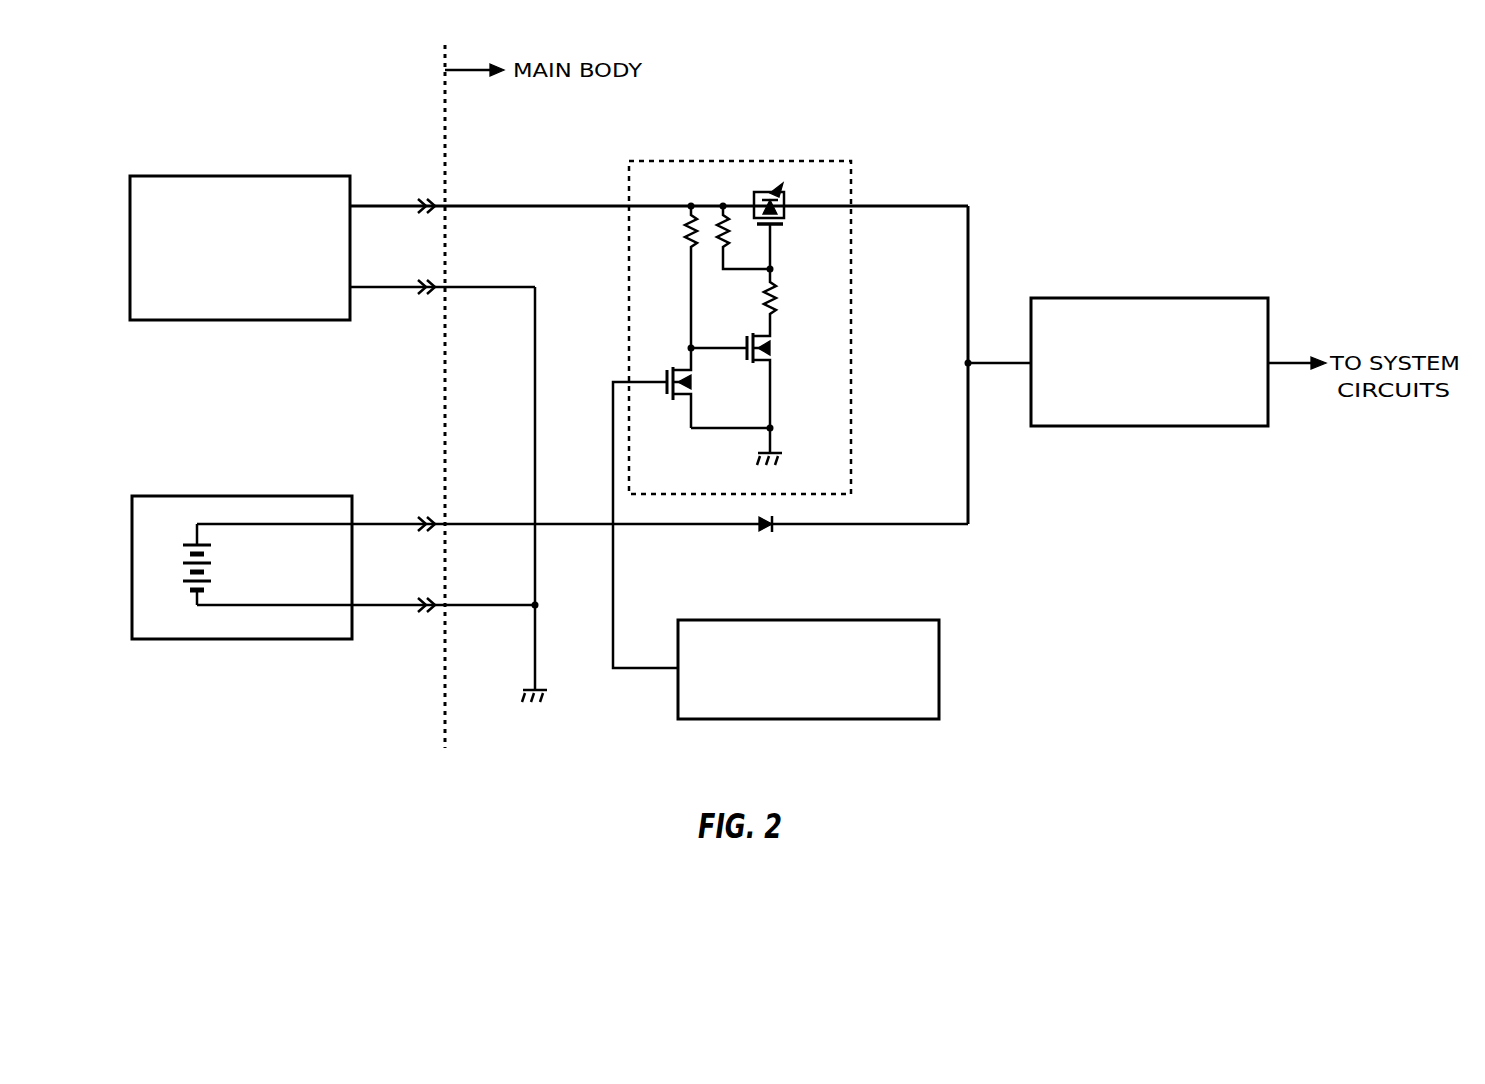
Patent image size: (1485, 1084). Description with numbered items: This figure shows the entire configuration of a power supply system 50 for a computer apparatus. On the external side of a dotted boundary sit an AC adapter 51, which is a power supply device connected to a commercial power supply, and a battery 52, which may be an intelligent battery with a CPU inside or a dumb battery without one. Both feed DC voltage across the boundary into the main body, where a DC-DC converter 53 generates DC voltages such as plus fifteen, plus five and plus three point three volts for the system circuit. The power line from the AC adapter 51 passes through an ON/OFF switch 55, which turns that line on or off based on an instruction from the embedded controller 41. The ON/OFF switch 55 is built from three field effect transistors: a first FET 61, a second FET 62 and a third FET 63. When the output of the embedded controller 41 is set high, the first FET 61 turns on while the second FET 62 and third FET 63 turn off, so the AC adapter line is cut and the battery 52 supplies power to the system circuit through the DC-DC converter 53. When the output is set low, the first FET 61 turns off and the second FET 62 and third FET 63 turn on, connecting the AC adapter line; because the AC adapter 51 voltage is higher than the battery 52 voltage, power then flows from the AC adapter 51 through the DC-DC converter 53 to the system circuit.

The embedded controller 41 is at (939, 644).
The power supply circuit 50 is at (840, 92).
The AC adapter 51 is at (306, 176).
The battery 52 is at (310, 496).
The DC-DC converter 53 is at (1220, 298).
The ON/OFF switch 55 is at (756, 312).
The first FET (FET1) 61 is at (660, 350).
The second FET (FET2) 62 is at (792, 343).
The third FET (FET3) 63 is at (806, 214).